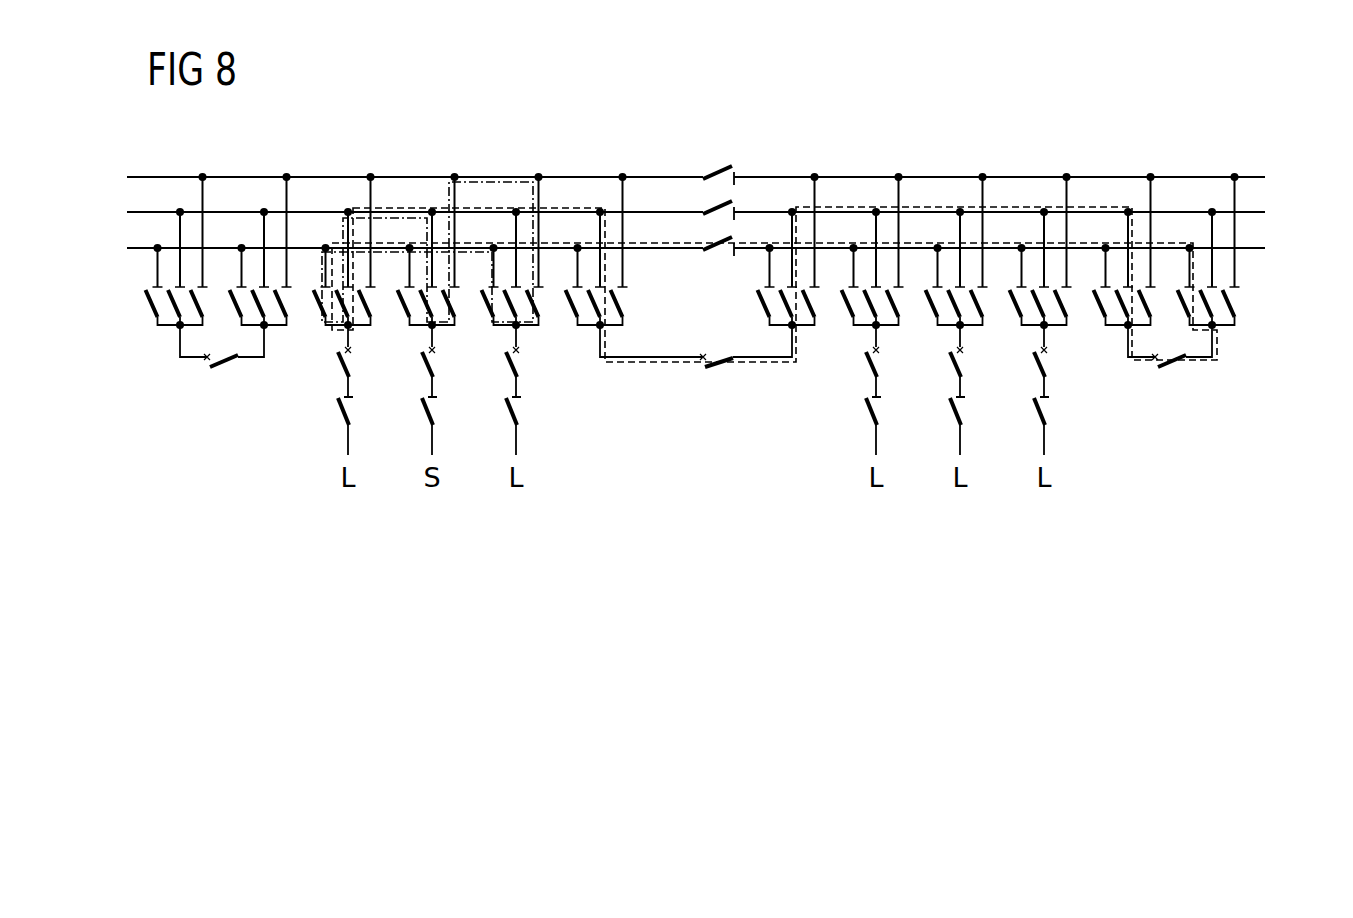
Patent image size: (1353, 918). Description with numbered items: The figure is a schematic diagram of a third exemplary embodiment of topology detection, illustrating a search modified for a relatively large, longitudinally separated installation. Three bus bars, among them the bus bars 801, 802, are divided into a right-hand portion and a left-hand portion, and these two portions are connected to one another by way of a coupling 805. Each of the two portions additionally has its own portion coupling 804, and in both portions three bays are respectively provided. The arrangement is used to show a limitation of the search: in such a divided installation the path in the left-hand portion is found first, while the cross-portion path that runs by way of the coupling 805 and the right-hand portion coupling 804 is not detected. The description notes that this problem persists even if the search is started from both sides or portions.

The bus bar 801 is at (1256, 177).
The bus bar 802 is at (1256, 212).
The portion coupling 804 is at (142, 283).
The coupling 805 is at (800, 380).